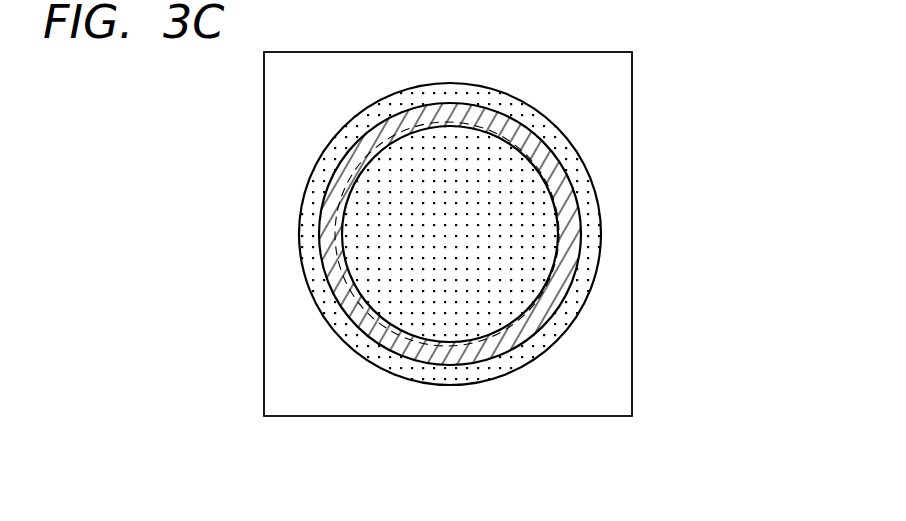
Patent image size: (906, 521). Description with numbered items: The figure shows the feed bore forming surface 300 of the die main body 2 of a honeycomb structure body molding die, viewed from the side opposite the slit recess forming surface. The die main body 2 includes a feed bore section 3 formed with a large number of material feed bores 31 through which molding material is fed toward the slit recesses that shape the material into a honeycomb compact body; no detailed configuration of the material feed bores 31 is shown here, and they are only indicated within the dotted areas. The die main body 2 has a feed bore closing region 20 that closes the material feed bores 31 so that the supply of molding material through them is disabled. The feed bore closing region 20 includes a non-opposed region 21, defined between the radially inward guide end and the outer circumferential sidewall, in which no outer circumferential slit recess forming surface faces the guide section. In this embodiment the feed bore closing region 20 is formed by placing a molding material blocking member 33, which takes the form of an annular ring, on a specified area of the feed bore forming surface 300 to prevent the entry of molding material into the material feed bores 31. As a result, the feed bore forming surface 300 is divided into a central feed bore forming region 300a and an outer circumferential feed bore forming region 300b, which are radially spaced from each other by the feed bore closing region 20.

The die main body 2 is at (650, 101).
The feed bore section 3 is at (636, 352).
The molding material blocking member 33 is at (348, 146).
The feed bore closing region 20 is at (341, 293).
The non-opposed region 21 is at (340, 236).
The feed bore forming surface 300 is at (427, 293).
The central feed bore forming region 300a is at (502, 300).
The outer circumferential feed bore forming region 300b is at (518, 357).
The material feed bores 31 is at (460, 222).